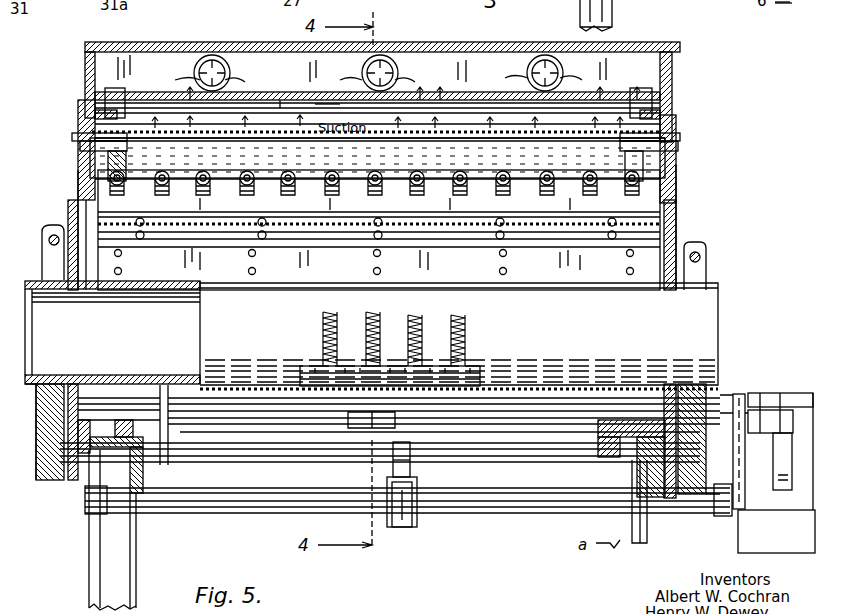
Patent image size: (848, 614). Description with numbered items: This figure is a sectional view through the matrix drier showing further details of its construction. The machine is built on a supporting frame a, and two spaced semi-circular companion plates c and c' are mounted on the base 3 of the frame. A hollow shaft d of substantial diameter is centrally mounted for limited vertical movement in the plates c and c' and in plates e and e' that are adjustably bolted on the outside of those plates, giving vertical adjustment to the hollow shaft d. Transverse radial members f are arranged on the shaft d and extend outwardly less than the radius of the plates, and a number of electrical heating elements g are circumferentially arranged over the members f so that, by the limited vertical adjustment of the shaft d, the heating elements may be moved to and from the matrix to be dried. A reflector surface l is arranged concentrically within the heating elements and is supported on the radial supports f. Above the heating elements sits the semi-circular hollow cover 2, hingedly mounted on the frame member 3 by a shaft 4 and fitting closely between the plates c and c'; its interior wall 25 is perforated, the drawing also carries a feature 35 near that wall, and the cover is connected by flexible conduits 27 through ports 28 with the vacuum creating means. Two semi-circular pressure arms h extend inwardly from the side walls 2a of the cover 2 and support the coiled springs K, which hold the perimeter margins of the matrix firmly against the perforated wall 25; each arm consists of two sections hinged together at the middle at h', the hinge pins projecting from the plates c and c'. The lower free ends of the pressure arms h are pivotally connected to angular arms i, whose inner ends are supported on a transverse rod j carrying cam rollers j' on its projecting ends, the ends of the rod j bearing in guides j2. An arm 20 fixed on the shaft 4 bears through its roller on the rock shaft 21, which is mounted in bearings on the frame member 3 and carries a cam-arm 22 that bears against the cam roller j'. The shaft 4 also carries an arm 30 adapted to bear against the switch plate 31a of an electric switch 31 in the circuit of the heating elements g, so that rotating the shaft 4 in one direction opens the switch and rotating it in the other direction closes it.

The supporting frame a is at (673, 70).
The cover 2 is at (85, 68).
The side walls of the cover 2a is at (78, 186).
The base / frame member 3 is at (80, 478).
The shaft 4 is at (268, 420).
The arm 20 is at (742, 396).
The rock shaft 21 is at (220, 505).
The cam-arm 22 is at (400, 527).
The perforated interior wall 25 is at (292, 100).
The flexible conduits 27 is at (212, 54).
The ports 28 is at (150, 95).
The arm 30 is at (782, 492).
The electric switch 31 is at (740, 546).
The switch plate 31a is at (805, 395).
The suction slot 35 is at (318, 105).
The coiled springs K is at (118, 110).
The semi-circular companion plate c is at (59, 225).
The semi-circular companion plate c' is at (694, 227).
The hollow shaft d is at (708, 327).
The plate e is at (51, 234).
The plate e' is at (717, 266).
The transverse radial members f is at (705, 265).
The electrical heating elements g is at (240, 183).
The semi-circular pressure arms h is at (431, 175).
The hinge h' is at (381, 149).
The angular arms i is at (175, 470).
The transverse rod j is at (440, 459).
The cam rollers j' is at (424, 465).
The guides j2 is at (140, 490).
The reflector surface l is at (312, 222).